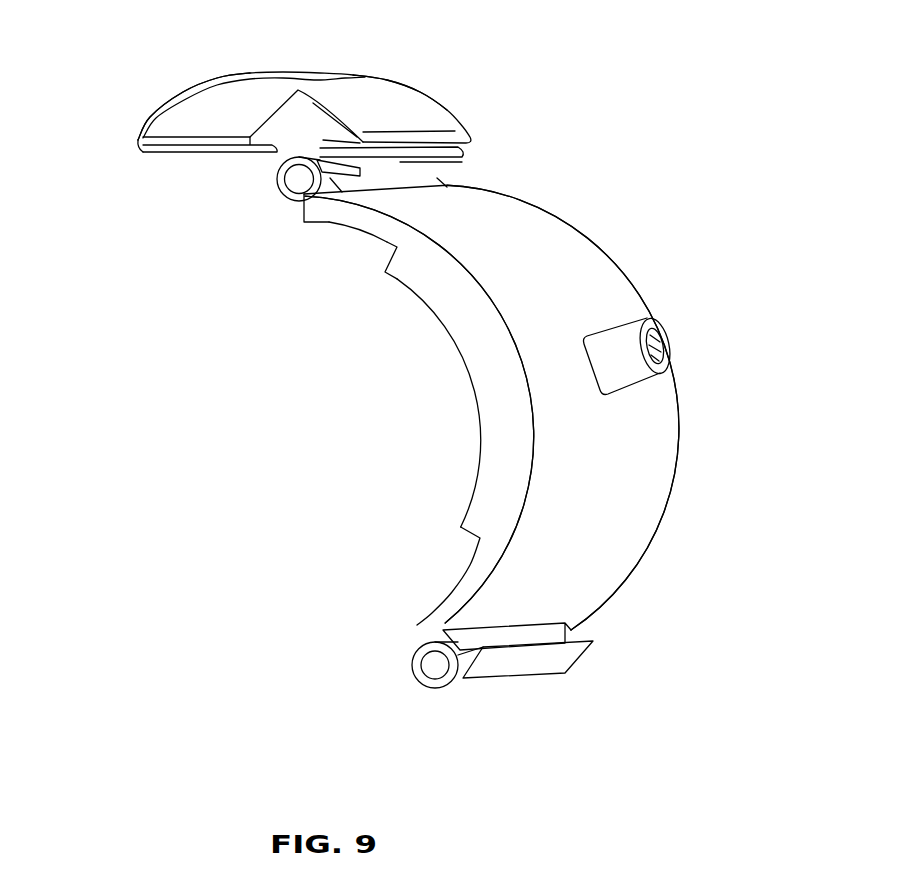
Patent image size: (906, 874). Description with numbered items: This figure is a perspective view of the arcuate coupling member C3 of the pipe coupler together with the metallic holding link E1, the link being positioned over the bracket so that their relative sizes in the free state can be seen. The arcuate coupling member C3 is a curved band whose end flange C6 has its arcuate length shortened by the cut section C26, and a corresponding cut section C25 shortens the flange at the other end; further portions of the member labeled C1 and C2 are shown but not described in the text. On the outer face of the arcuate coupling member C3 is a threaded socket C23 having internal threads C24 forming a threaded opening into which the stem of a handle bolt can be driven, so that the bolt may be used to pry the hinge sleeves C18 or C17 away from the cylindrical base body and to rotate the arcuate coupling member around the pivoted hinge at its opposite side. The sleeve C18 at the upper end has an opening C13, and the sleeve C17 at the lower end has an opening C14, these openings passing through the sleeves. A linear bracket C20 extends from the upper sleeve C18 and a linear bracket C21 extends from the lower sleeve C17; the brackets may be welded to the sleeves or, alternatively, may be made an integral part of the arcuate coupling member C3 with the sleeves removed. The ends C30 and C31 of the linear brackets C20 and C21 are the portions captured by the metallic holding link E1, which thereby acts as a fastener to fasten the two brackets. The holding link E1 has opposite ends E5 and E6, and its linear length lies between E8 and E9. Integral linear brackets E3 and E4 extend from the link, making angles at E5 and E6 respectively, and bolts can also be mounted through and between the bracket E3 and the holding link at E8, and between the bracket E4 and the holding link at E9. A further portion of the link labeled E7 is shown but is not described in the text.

The metallic holding link E1 is at (360, 98).
The integral linear bracket E3 is at (162, 150).
The integral linear bracket E4 is at (340, 145).
The holding link end E5 is at (138, 141).
The holding link end E6 is at (335, 132).
The cover inner surface E7 is at (193, 100).
The holding link linear portion end E8 is at (200, 85).
The holding link linear portion end E9 is at (440, 96).
The ring outer surface C1 is at (638, 289).
The ring inner edge C2 is at (518, 368).
The arcuate coupling member C3 is at (538, 268).
The end flange C6 is at (460, 317).
The opening through sleeve C13 is at (298, 181).
The opening through sleeve C14 is at (435, 665).
The sleeve C17 is at (510, 683).
The sleeve C18 is at (293, 203).
The linear bracket C20 is at (464, 160).
The linear bracket C21 is at (537, 660).
The threaded socket C23 is at (615, 367).
The internal threads C24 is at (660, 344).
The cut section C25 is at (387, 242).
The cut section C26 is at (460, 530).
The linear bracket end C30 is at (380, 173).
The linear bracket end C31 is at (577, 630).